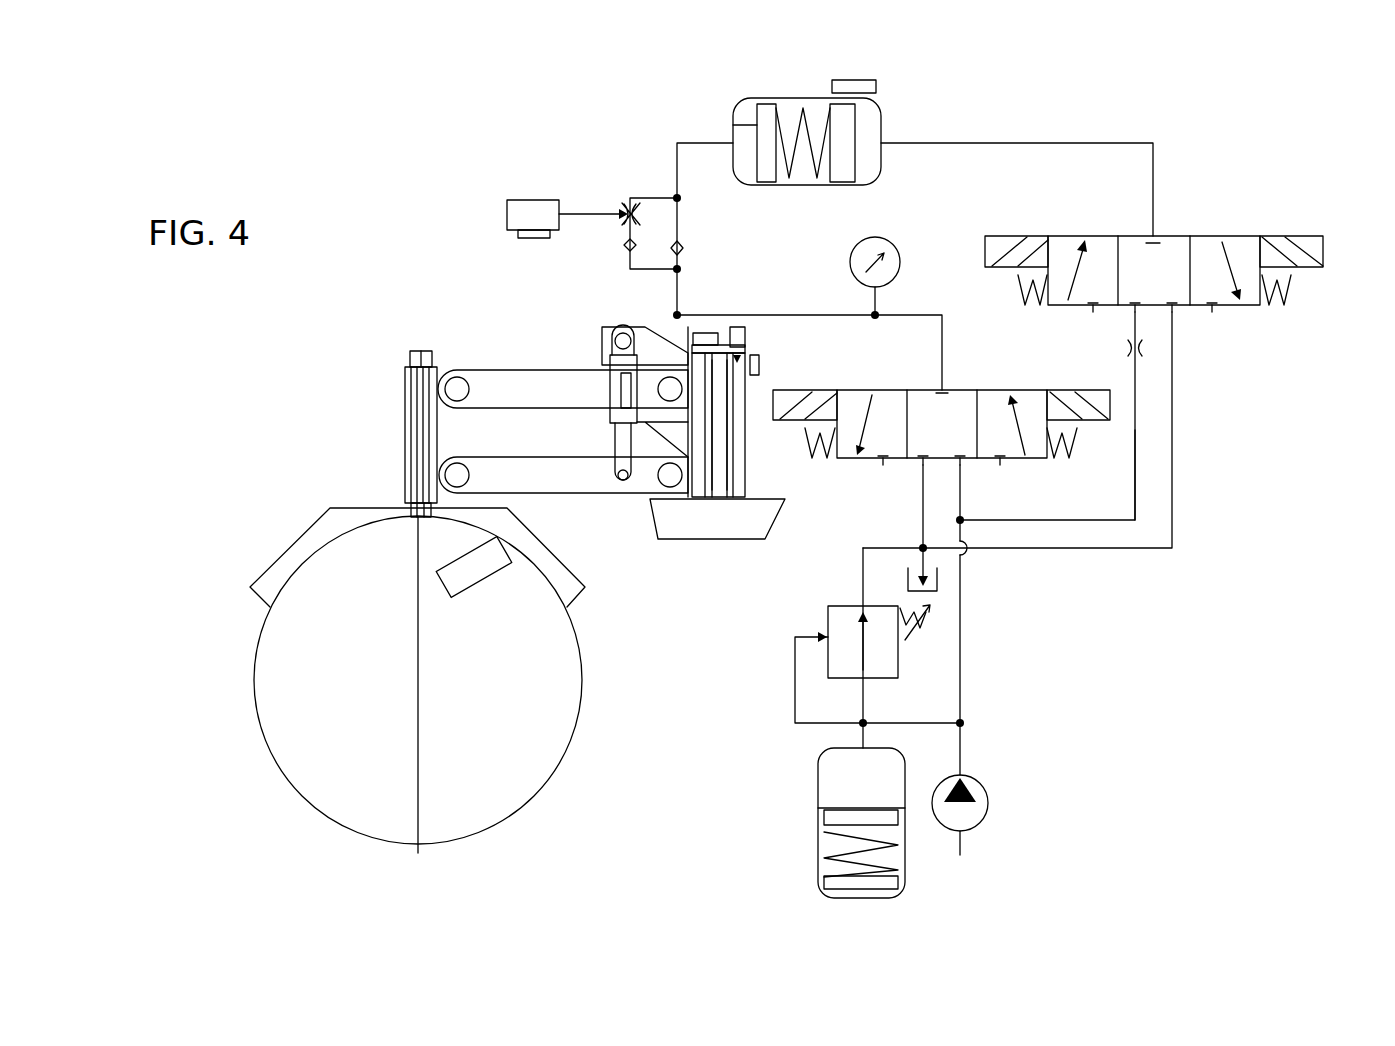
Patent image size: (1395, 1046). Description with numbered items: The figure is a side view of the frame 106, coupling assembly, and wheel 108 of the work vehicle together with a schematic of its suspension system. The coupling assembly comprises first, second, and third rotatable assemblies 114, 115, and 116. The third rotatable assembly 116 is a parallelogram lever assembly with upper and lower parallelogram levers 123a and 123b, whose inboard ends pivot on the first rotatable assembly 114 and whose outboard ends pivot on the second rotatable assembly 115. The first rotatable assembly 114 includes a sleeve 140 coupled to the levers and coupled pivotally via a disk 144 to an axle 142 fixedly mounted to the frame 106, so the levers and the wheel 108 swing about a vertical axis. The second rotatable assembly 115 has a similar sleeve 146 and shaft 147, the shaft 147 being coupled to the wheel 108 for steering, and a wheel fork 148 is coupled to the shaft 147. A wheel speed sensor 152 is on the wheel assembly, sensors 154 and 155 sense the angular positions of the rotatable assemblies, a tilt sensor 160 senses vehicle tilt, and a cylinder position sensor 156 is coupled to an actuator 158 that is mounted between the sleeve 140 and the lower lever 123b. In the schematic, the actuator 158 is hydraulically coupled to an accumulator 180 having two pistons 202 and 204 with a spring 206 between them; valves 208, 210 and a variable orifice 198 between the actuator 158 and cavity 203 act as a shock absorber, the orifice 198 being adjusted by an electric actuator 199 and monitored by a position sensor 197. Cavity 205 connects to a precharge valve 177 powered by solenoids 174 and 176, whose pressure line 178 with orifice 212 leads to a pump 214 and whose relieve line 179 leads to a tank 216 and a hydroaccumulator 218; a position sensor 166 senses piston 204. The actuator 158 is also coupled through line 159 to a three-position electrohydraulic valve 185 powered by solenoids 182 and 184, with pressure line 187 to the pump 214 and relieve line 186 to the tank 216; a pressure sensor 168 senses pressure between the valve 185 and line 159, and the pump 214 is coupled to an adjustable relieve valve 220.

The frame 106 is at (727, 531).
The wheel 108 is at (340, 567).
The first rotatable assembly 114 is at (773, 306).
The second rotatable assembly 115 is at (362, 359).
The third rotatable assembly 116 is at (481, 332).
The upper parallelogram lever 123a is at (500, 370).
The lower parallelogram lever 123b is at (580, 497).
The sleeve 140 is at (737, 490).
The axle 142 is at (718, 467).
The disk 144 is at (722, 330).
The sleeve 146 is at (403, 383).
The shaft 147 is at (405, 423).
The wheel fork 148 is at (557, 573).
The wheel speed sensor 152 is at (485, 568).
The sensor 154 is at (753, 375).
The sensor 155 is at (412, 353).
The cylinder position sensor 156 is at (623, 387).
The actuator 158 is at (612, 418).
The line 159 is at (673, 292).
The tilt sensor 160 is at (697, 333).
The position sensor 166 is at (880, 86).
The pressure sensor 168 is at (893, 270).
The solenoid 174 is at (1000, 238).
The solenoid 176 is at (1310, 240).
The precharge valve 177 is at (1178, 240).
The pressure line 178 is at (1133, 428).
The relieve line 179 is at (1172, 405).
The accumulator 180 is at (808, 97).
The solenoid 182 is at (792, 392).
The solenoid 184 is at (1093, 392).
The three-position electrohydraulic valve 185 is at (920, 393).
The relieve line 186 is at (923, 500).
The pressure line 187 is at (960, 485).
The position sensor 197 is at (518, 237).
The variable orifice 198 is at (626, 210).
The electric actuator 199 is at (513, 203).
The piston 202 is at (765, 170).
The cavity 203 is at (735, 125).
The piston 204 is at (845, 165).
The cavity 205 is at (885, 133).
The spring 206 is at (820, 160).
The valve 208 is at (675, 247).
The valve 210 is at (625, 247).
The orifice 212 is at (1130, 346).
The pump 214 is at (988, 818).
The tank 216 is at (935, 580).
The hydroaccumulator 218 is at (900, 873).
The adjustable relieve valve 220 is at (828, 612).